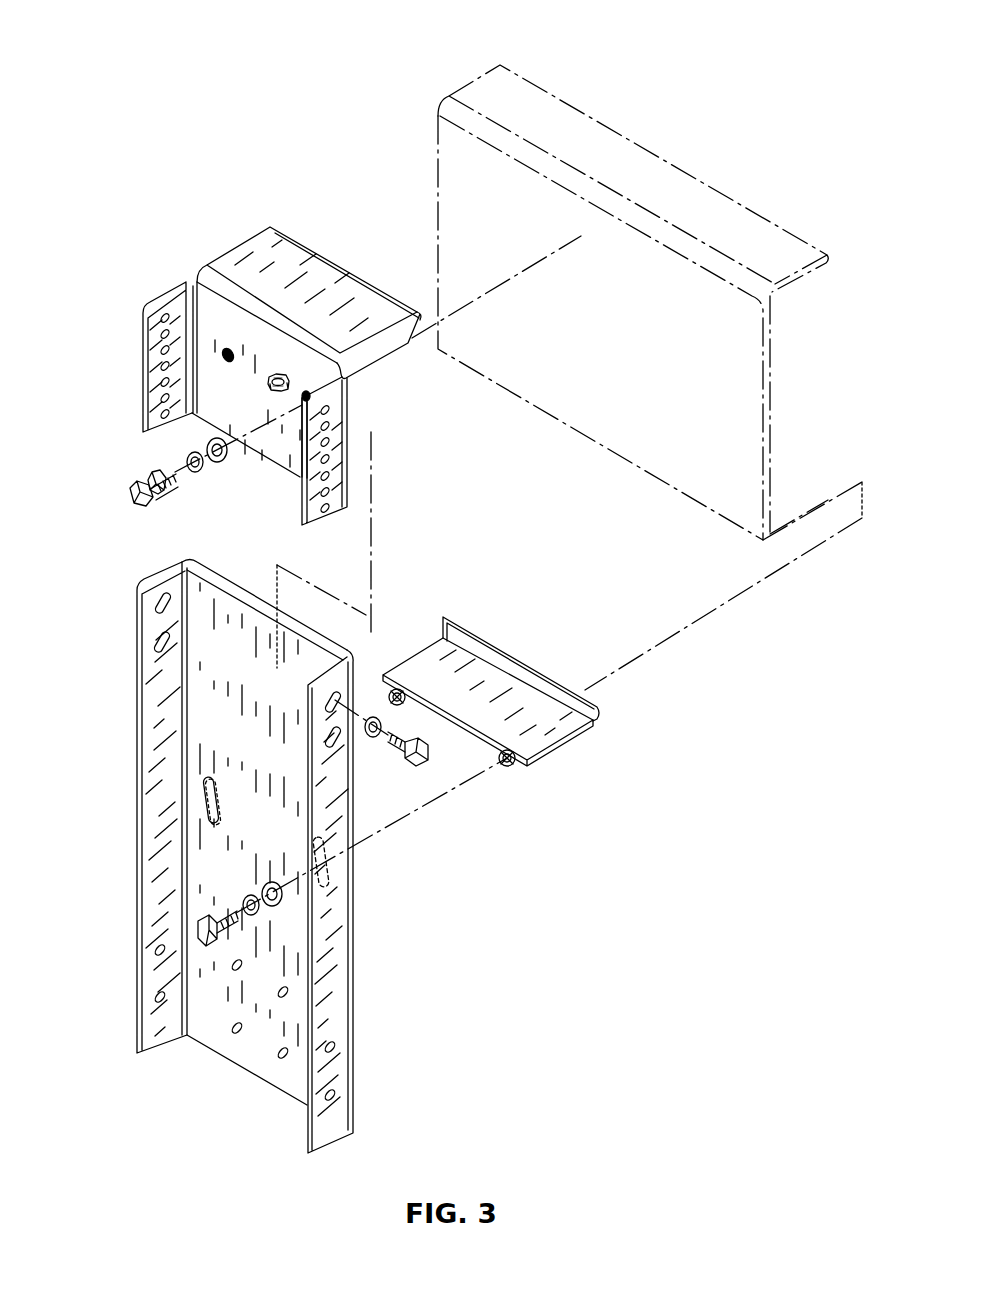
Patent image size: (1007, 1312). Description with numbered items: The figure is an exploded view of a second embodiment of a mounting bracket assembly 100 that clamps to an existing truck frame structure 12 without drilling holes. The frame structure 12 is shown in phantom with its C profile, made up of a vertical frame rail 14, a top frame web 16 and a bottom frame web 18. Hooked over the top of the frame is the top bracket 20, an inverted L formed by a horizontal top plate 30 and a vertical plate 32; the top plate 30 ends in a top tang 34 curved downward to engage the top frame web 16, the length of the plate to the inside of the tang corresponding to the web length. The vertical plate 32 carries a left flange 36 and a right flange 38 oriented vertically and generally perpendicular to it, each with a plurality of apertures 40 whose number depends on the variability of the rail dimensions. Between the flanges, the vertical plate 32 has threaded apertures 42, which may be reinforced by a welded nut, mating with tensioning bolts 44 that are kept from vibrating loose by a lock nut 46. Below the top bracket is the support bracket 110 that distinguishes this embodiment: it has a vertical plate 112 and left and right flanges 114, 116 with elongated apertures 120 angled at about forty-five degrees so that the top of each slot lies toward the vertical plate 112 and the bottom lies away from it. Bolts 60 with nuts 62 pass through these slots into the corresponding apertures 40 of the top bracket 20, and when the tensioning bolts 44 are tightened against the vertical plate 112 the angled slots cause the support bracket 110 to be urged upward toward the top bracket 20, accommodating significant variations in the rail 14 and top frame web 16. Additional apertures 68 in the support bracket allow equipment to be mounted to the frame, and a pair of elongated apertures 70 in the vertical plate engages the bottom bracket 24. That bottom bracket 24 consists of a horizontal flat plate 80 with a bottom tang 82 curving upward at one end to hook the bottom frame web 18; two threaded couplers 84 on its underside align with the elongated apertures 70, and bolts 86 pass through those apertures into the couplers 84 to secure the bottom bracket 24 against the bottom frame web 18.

The mounting bracket assembly 100 is at (116, 64).
The truck frame structure 12 is at (622, 119).
The vertical frame rail 14 is at (776, 378).
The top frame web 16 is at (796, 292).
The bottom frame web 18 is at (794, 484).
The top bracket 20 is at (190, 253).
The top plate 30 is at (252, 250).
The vertical plate 32 is at (238, 410).
The top tang 34 is at (417, 310).
The left flange 36 is at (165, 303).
The right flange 38 is at (313, 397).
The apertures 40 is at (158, 366).
The threaded apertures 42 is at (307, 392).
The tensioning bolts 44 is at (130, 500).
The lock nut 46 is at (150, 476).
The nuts 62 is at (272, 374).
The support bracket 110 is at (102, 676).
The vertical plate 112 is at (254, 690).
The left flange 114 is at (150, 578).
The right flange 116 is at (340, 668).
The elongated apertures 120 is at (156, 641).
The elongated apertures 70 is at (217, 790).
The apertures 68 is at (156, 996).
The bolts 86 is at (200, 926).
The bottom bracket 24 is at (513, 640).
The flat plate 80 is at (490, 700).
The bottom tang 82 is at (597, 706).
The threaded couplers 84 is at (507, 767).
The bolts 60 is at (412, 764).